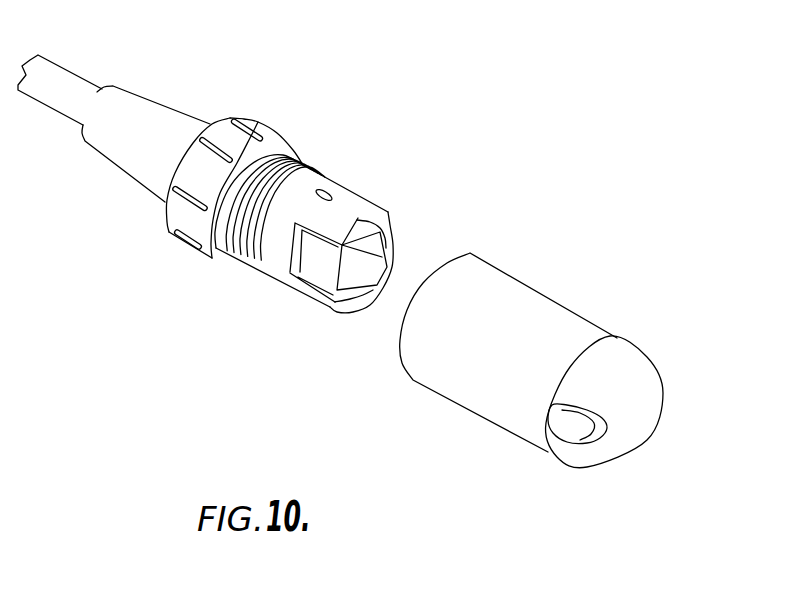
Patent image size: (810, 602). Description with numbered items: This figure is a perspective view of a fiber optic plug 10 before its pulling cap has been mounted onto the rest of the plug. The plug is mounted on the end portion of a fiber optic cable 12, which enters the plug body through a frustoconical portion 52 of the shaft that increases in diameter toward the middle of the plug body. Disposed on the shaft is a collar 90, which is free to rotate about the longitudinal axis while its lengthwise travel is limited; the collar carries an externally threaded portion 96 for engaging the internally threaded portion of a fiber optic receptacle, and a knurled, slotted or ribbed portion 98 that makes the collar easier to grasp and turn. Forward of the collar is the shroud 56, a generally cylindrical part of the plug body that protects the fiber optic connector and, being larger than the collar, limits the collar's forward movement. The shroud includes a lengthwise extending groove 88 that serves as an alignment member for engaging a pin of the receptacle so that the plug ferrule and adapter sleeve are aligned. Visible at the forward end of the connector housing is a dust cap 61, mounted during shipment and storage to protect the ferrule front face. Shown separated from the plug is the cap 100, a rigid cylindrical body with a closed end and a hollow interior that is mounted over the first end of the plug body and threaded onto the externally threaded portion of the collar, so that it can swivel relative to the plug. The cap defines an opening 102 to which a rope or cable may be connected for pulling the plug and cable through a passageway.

The fiber optic plug 10 is at (326, 126).
The fiber optic cable 12 is at (68, 88).
The frustoconical portion 52 is at (153, 112).
The shroud 56 is at (352, 205).
The dust cap 61 is at (373, 257).
The lengthwise extending groove 88 is at (396, 226).
The collar 90 is at (194, 238).
The externally threaded portion 96 is at (233, 263).
The knurled, slotted or ribbed portion 98 is at (257, 125).
The cap 100 is at (555, 323).
The opening 102 is at (570, 427).